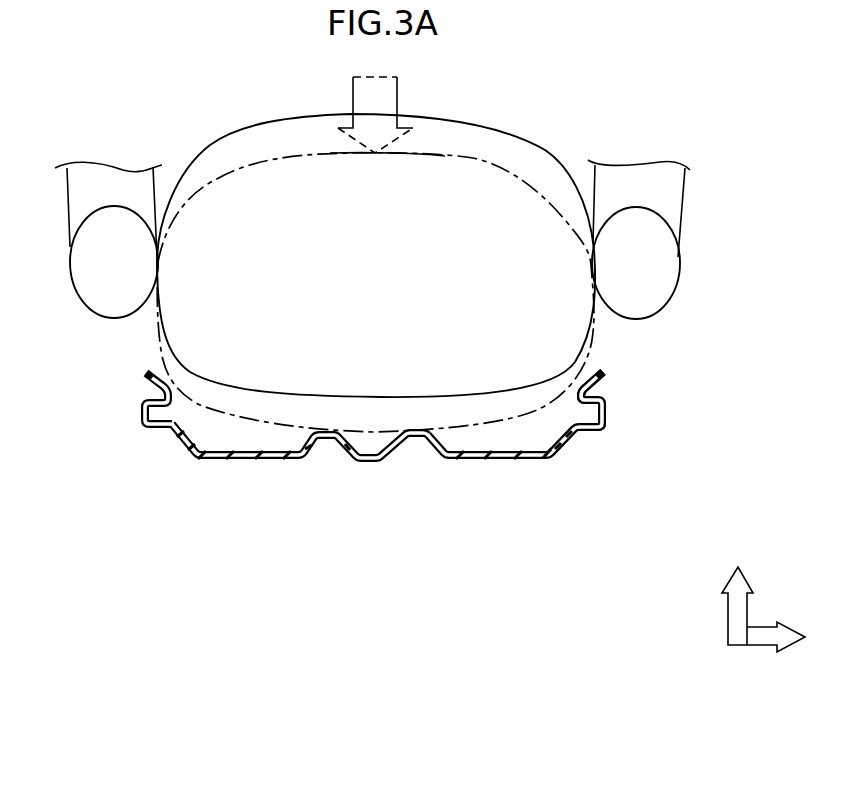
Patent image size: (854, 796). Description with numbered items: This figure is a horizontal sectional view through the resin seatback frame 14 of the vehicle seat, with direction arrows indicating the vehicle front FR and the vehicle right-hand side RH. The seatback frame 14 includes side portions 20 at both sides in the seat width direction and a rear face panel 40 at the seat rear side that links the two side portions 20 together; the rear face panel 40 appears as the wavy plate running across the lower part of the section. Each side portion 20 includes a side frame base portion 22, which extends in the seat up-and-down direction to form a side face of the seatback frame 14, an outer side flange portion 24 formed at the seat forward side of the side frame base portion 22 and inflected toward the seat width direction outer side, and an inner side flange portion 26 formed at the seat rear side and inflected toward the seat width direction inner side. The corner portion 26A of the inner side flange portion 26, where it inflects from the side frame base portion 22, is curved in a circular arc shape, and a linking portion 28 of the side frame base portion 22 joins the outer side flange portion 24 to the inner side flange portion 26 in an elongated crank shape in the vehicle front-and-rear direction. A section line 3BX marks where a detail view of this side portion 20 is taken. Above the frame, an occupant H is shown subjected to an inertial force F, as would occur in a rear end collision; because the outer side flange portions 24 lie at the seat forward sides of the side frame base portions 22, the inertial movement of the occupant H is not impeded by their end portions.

The seatback frame 14 is at (191, 465).
The side portion 20 is at (139, 409).
The side frame base portion 22 is at (608, 417).
The outer side flange portion 24 is at (596, 372).
The inner side flange portion 26 is at (588, 436).
The corner portion 26A is at (599, 432).
The linking portion 28 is at (597, 393).
The rear face panel 40 is at (418, 442).
The section line 3BX is at (626, 455).
The occupant H is at (675, 288).
The inertial force F is at (397, 82).
The vehicle front direction FR is at (728, 613).
The vehicle right direction RH is at (752, 648).